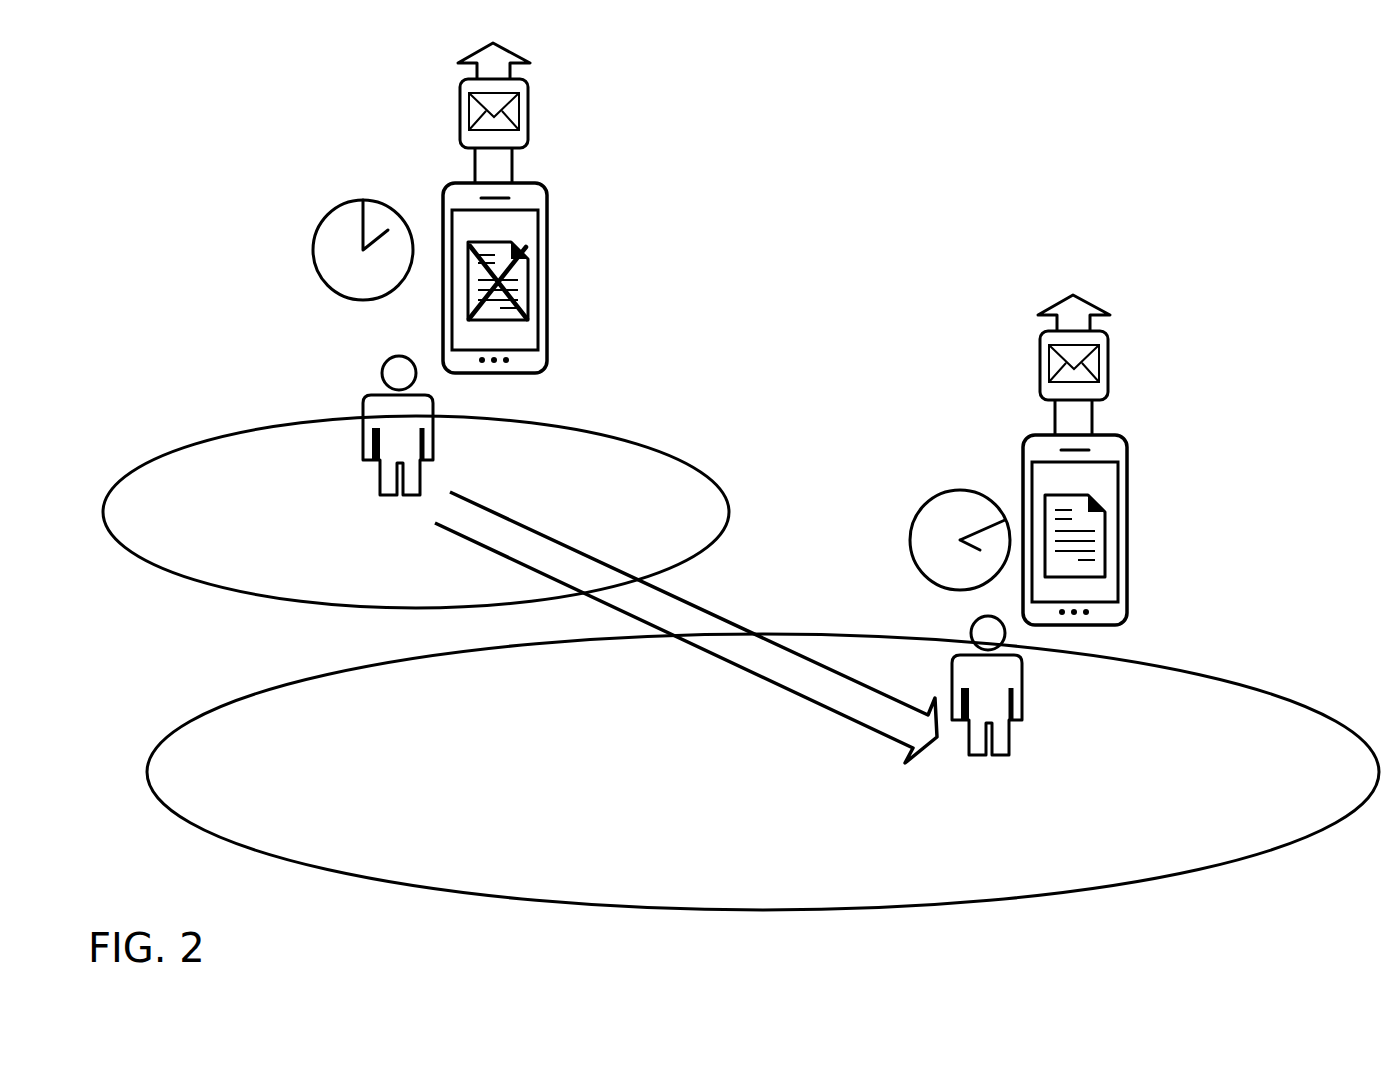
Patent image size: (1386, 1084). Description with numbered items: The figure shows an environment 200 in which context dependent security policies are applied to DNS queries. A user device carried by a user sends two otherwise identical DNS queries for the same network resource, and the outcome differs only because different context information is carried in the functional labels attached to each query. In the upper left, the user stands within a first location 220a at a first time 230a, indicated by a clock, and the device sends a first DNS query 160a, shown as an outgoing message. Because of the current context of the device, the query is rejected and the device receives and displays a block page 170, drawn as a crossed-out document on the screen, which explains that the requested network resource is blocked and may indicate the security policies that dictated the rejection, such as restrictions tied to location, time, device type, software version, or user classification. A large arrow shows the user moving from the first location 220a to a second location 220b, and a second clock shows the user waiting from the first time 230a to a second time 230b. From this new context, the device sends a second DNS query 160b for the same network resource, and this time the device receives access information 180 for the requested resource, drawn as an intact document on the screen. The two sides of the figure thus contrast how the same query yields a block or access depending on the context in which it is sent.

The environment 200 is at (1265, 167).
The first DNS query 160a is at (530, 128).
The second DNS query 160b is at (1112, 378).
The block page 170 is at (548, 293).
The access information 180 is at (1140, 545).
The first location 220a is at (702, 468).
The second location 220b is at (413, 887).
The first time 230a is at (312, 252).
The second time 230b is at (910, 542).